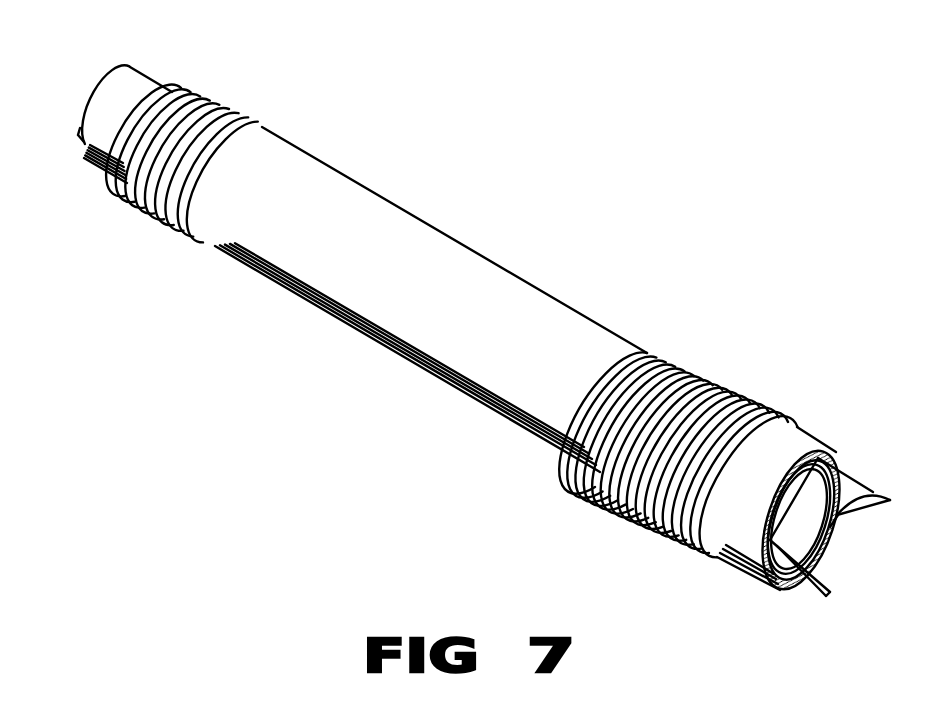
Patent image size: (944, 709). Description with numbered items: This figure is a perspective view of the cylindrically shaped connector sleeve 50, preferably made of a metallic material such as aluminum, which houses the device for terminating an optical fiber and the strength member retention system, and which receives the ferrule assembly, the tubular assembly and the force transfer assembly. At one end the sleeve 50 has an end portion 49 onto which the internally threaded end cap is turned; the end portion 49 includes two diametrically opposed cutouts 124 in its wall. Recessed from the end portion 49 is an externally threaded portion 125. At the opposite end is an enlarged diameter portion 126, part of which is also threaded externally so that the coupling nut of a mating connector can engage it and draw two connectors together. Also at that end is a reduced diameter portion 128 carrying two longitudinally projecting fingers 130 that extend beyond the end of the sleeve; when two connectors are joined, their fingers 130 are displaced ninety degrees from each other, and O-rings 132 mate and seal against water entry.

The end portion 49 is at (156, 88).
The connector sleeve 50 is at (431, 222).
The cutouts 124 is at (79, 134).
The externally threaded portion 125 is at (230, 115).
The enlarged diameter portion 126 is at (808, 445).
The reduced diameter portion 128 is at (828, 450).
The fingers 130 is at (830, 592).
The O-rings 132 is at (776, 586).